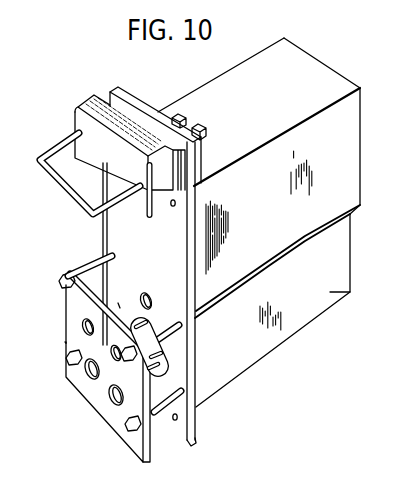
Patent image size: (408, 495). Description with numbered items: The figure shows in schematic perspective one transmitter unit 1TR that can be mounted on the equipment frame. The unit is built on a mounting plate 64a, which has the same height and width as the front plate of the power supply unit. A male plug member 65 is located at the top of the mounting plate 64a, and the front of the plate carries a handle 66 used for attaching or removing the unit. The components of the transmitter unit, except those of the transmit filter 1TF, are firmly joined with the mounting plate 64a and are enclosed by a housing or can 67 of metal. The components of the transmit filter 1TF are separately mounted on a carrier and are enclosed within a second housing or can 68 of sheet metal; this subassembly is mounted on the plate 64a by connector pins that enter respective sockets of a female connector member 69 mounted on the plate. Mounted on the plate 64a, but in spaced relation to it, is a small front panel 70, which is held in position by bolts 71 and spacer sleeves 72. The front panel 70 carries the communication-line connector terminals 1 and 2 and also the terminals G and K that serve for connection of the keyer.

The male plug member 65 is at (152, 105).
The handle 66 is at (58, 180).
The housing or can 67 is at (347, 85).
The second housing or can 68 is at (346, 290).
The transmit filter 1TF is at (341, 320).
The mounting plate 64a is at (105, 229).
The female connector member 69 is at (150, 318).
The front panel 70 is at (112, 410).
The bolts 71 is at (62, 285).
The spacer sleeves 72 is at (100, 258).
The keyer terminal G is at (88, 379).
The keyer terminal K is at (120, 410).
The transmitter unit 1TR is at (52, 348).
The communication-line connector terminal 1 is at (65, 342).
The communication-line connector terminal 2 is at (121, 297).